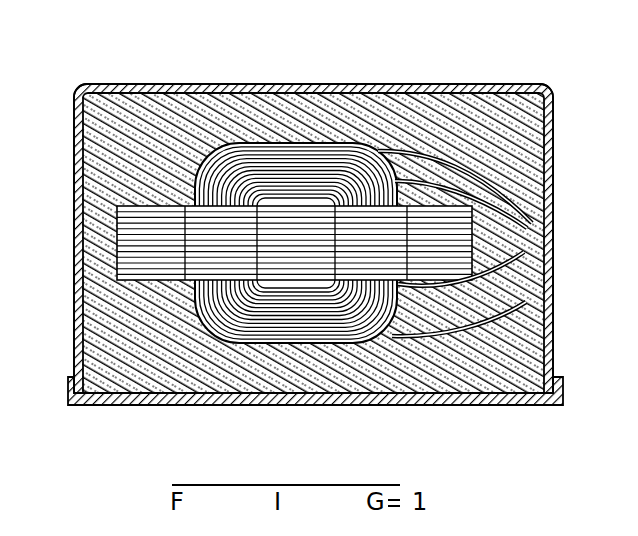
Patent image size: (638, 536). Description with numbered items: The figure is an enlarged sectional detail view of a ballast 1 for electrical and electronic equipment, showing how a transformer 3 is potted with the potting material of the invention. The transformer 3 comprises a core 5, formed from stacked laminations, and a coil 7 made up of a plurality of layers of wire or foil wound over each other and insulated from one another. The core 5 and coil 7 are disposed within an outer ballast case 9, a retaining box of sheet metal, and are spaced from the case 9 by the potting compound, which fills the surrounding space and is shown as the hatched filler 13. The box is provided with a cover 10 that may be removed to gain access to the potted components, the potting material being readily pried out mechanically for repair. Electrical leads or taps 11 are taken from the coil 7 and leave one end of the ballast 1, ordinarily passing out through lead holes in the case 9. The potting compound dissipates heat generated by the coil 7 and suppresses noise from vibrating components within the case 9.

The ballast 1 is at (178, 80).
The transformer 3 is at (200, 175).
The core 5 is at (134, 241).
The coil 7 is at (296, 156).
The ballast case 9 is at (553, 157).
The cover 10 is at (227, 404).
The electrical leads or taps 11 is at (535, 204).
The filler compound 13 is at (432, 378).